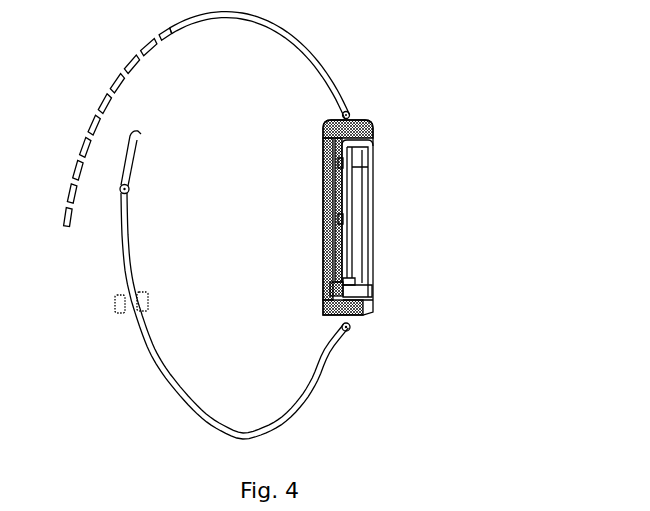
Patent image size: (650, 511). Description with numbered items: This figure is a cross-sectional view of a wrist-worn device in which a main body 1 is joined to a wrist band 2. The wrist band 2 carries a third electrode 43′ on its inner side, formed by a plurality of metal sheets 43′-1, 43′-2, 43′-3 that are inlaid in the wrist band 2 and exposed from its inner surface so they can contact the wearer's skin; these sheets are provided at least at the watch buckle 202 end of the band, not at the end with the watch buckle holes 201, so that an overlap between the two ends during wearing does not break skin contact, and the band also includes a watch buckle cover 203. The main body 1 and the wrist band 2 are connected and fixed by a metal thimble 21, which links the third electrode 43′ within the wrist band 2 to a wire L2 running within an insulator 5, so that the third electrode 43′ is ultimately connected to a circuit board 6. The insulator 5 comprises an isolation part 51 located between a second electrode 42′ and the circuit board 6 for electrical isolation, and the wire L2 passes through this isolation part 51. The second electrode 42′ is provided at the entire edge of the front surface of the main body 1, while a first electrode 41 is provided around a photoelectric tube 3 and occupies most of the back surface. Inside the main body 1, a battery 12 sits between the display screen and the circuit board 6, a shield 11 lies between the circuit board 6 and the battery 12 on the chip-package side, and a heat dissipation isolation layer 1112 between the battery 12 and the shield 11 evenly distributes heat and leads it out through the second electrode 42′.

The main body 1 is at (370, 240).
The shield 11 is at (347, 190).
The battery 12 is at (353, 215).
The heat dissipation isolation layer 1112 is at (343, 207).
The wrist band 2 is at (318, 390).
The watch buckle holes 201 is at (148, 70).
The watch buckle 202 is at (141, 132).
The watch buckle cover 203 is at (149, 300).
The metal thimble 21 is at (353, 326).
The photoelectric tube 3 is at (334, 220).
The first electrode 41 is at (332, 189).
The second electrode 42′ is at (368, 128).
The third electrode 43′ is at (197, 230).
The metal sheet 43′-1 is at (128, 234).
The metal sheet 43′-2 is at (130, 268).
The metal sheet 43′-3 is at (134, 298).
The insulator 5 is at (370, 313).
The isolation part 51 is at (358, 284).
The circuit board 6 is at (333, 160).
The wire L2 is at (392, 300).